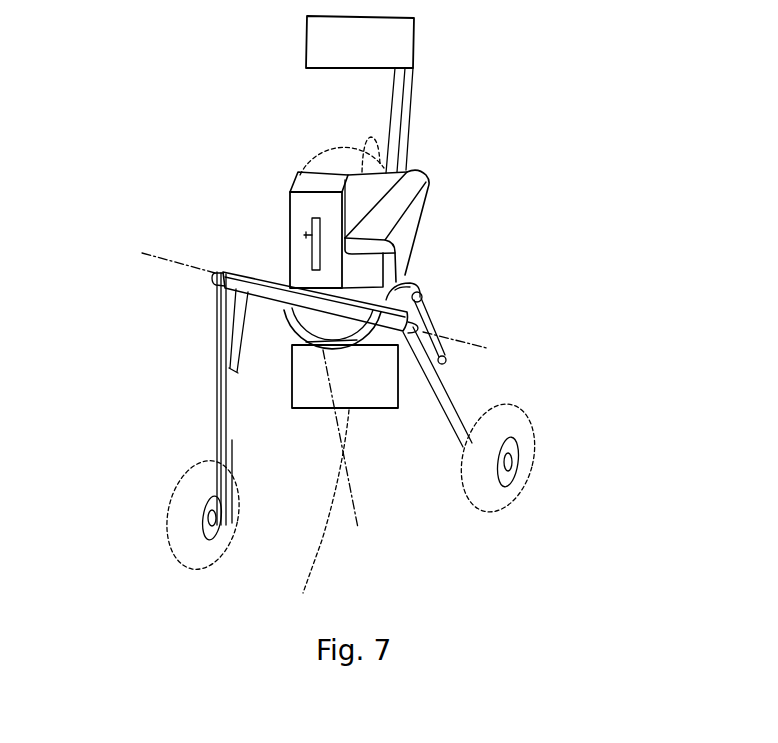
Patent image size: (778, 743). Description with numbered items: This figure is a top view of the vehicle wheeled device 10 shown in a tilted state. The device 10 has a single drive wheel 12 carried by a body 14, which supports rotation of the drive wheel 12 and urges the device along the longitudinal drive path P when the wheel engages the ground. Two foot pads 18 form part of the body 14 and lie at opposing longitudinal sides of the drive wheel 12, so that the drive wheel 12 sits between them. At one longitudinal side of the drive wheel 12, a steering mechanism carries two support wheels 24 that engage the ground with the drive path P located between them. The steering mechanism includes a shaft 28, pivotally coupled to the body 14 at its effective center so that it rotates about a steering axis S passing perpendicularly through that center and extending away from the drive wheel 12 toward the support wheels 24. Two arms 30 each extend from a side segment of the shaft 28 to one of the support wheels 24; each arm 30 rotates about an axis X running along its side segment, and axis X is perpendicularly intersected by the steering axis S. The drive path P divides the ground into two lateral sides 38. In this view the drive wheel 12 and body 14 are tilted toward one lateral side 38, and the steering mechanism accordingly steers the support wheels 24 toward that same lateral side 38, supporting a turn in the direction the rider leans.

The vehicle wheeled device 10 is at (153, 189).
The drive wheel 12 is at (317, 145).
The body 14 is at (288, 206).
The foot pads 18 is at (325, 42).
The support wheels 24 is at (170, 507).
The shaft 28 is at (256, 278).
The arms 30 is at (217, 375).
The lateral sides 38 is at (275, 547).
The axis X is at (170, 260).
The steering axis S is at (360, 512).
The drive path P is at (318, 555).